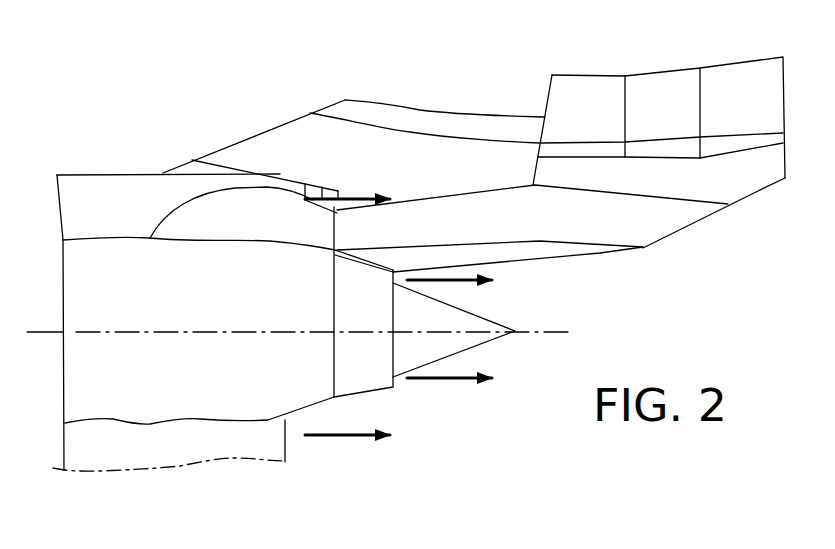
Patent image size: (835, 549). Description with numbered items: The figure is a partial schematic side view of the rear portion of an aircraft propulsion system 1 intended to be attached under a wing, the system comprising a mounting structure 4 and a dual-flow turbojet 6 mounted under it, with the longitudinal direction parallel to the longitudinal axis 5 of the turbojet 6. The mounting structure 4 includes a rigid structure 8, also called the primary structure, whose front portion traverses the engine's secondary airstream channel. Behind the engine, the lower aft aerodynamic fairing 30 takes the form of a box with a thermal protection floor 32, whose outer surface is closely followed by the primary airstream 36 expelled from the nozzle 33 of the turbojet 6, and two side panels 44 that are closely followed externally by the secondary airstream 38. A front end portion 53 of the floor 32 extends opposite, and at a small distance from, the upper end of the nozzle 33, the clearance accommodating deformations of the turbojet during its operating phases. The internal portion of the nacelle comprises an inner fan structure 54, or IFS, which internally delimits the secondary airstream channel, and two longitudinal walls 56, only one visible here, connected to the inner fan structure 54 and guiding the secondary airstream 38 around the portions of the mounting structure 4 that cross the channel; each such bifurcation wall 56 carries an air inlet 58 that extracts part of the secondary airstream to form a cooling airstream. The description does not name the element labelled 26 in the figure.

The propulsion system 1 is at (294, 97).
The mounting structure 4 is at (525, 103).
The longitudinal axis 5 is at (50, 333).
The dual-flow turbojet 6 is at (90, 140).
The rigid structure 8 is at (420, 147).
The trailing edge region of wing 26 is at (720, 173).
The lower aft aerodynamic fairing 30 is at (643, 222).
The thermal protection floor 32 is at (533, 258).
The nozzle 33 is at (373, 384).
The primary airstream 36 is at (468, 281).
The secondary airstream 38 is at (360, 197).
The side panel 44 is at (493, 229).
The front end portion 53 is at (357, 259).
The inner fan structure 54 is at (290, 400).
The longitudinal wall 56 is at (173, 193).
The air inlet 58 is at (322, 237).